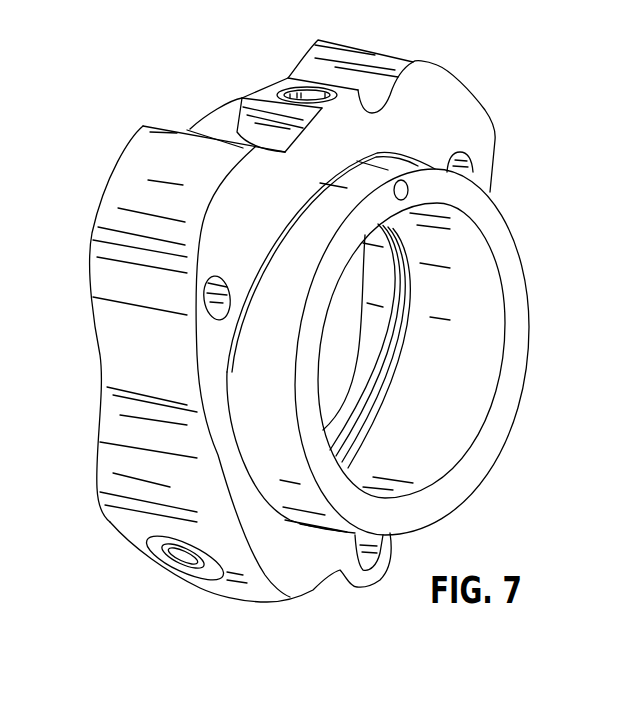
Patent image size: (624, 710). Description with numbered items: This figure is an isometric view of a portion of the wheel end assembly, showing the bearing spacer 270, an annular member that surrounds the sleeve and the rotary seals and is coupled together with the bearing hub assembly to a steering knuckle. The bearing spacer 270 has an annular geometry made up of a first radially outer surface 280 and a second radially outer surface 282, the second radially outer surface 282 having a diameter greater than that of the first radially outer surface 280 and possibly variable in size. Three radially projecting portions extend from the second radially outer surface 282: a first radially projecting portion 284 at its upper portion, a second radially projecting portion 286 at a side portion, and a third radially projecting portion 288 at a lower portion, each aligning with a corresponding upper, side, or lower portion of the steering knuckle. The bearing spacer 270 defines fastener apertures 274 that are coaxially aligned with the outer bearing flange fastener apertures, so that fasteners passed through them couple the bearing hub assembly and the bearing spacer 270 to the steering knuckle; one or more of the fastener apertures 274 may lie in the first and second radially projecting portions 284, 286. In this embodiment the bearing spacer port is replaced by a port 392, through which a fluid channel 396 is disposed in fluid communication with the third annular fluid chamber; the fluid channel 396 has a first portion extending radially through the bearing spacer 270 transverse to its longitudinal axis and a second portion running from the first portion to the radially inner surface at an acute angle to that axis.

The port 392 is at (254, 62).
The fluid channel 396 is at (317, 97).
The second radially projecting portion 286 is at (455, 105).
The bearing spacer 270 is at (145, 155).
The first radially projecting portion 284 is at (113, 222).
The fastener apertures 274 is at (210, 305).
The first radially outer surface 280 is at (253, 390).
The second radially outer surface 282 is at (130, 512).
The third radially projecting portion 288 is at (263, 572).